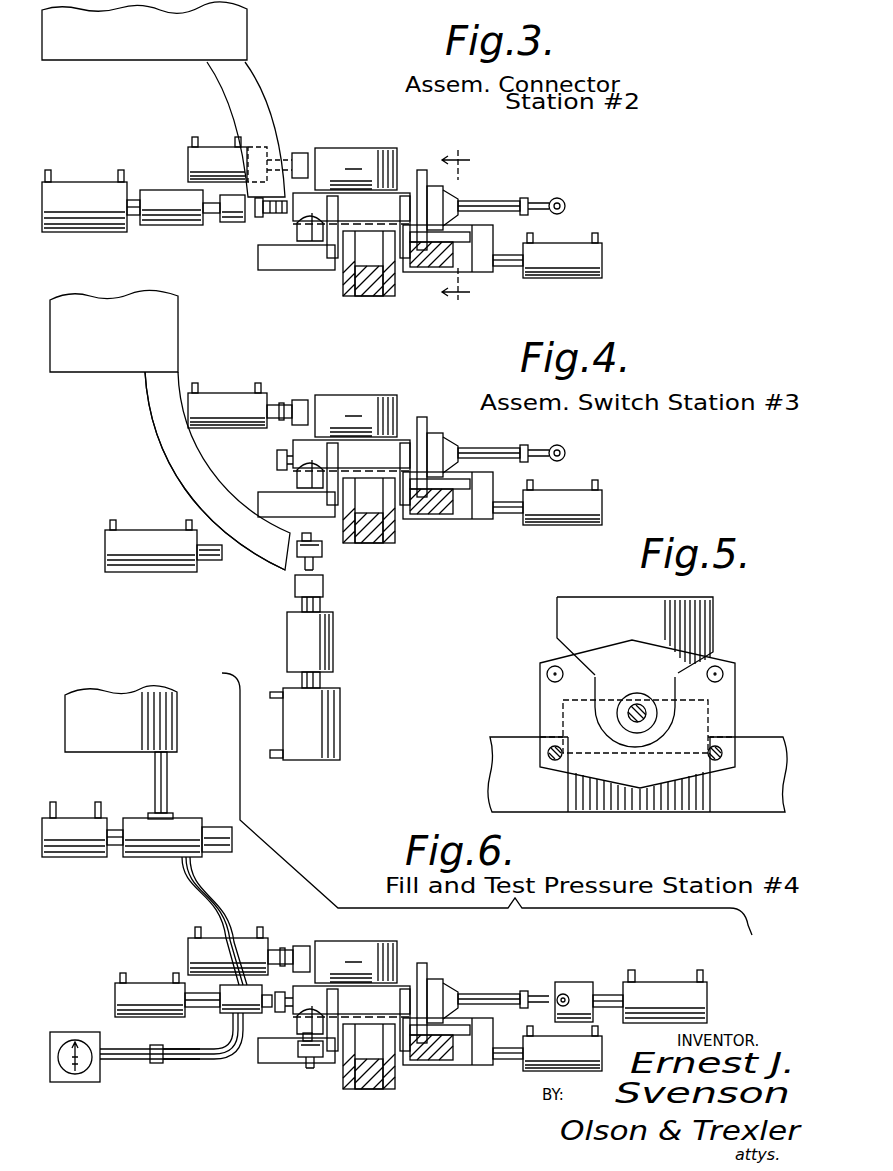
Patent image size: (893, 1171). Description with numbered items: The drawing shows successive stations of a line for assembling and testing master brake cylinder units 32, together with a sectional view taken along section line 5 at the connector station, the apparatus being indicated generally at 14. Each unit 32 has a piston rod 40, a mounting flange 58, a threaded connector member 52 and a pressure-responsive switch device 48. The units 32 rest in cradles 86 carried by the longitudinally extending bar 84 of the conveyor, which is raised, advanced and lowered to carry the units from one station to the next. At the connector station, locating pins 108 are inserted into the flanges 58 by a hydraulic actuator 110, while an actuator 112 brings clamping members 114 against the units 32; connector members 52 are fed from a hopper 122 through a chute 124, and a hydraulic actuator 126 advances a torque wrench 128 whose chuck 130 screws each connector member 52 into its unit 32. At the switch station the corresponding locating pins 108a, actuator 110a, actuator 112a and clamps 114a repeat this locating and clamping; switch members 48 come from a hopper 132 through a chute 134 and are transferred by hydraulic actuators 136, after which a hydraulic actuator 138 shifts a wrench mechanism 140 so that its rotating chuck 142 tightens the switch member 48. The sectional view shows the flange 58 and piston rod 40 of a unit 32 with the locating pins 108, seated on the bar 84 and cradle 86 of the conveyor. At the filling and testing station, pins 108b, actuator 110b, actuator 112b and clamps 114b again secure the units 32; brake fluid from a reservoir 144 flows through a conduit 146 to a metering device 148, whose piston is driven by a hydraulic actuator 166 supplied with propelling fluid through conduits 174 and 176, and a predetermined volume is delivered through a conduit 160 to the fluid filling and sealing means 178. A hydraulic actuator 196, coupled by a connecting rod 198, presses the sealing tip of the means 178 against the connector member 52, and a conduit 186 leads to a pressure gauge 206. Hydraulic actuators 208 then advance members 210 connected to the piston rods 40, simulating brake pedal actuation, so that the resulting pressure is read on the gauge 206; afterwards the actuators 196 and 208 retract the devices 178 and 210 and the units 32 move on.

In FIG. 3, the section line 5 is at (456, 222).
In FIG. 4, the indexing machine 14 is at (194, 364).
In FIG. 3, the master brake cylinder unit 32 is at (368, 141).
In FIG. 4, the master brake cylinder unit 32 is at (378, 389).
In FIG. 5, the master brake cylinder unit 32 is at (724, 615).
In FIG. 6, the master brake cylinder unit 32 is at (378, 939).
In FIG. 3, the piston rod 40 is at (512, 203).
In FIG. 4, the piston rod 40 is at (510, 450).
In FIG. 5, the piston rod 40 is at (655, 715).
In FIG. 6, the piston rod 40 is at (485, 997).
In FIG. 4, the pressure-responsive switch device 48 is at (322, 557).
In FIG. 6, the pressure-responsive switch device 48 is at (298, 1119).
In FIG. 3, the threaded connector member 52 is at (258, 218).
In FIG. 4, the threaded connector member 52 is at (275, 462).
In FIG. 6, the threaded connector member 52 is at (280, 1012).
In FIG. 3, the mounting flange 58 is at (422, 168).
In FIG. 4, the mounting flange 58 is at (420, 418).
In FIG. 5, the mounting flange 58 is at (695, 665).
In FIG. 6, the mounting flange 58 is at (422, 963).
In FIG. 3, the longitudinally extending bar 84 is at (366, 296).
In FIG. 4, the longitudinally extending bar 84 is at (395, 532).
In FIG. 5, the longitudinally extending bar 84 is at (758, 798).
In FIG. 6, the longitudinally extending bar 84 is at (370, 1090).
In FIG. 3, the cradles 86 is at (338, 278).
In FIG. 4, the cradles 86 is at (347, 547).
In FIG. 5, the cradles 86 is at (690, 800).
In FIG. 6, the cradles 86 is at (347, 1088).
In FIG. 3, the locating pins 108 is at (530, 170).
In FIG. 5, the locating pins 108 is at (790, 732).
In FIG. 4, the locating pins 108a is at (510, 439).
In FIG. 6, the locating pins 108b is at (485, 1095).
In FIG. 3, the hydraulic actuator 110 is at (620, 212).
In FIG. 4, the hydraulic actuator 110a is at (625, 475).
In FIG. 6, the hydraulic actuator 110b is at (500, 1148).
In FIG. 3, the actuator 112 is at (212, 152).
In FIG. 4, the actuator 112a is at (270, 374).
In FIG. 6, the actuator 112b is at (190, 912).
In FIG. 3, the clamping members 114 is at (330, 128).
In FIG. 4, the clamps 114a is at (365, 374).
In FIG. 6, the clamps 114b is at (312, 914).
In FIG. 3, the hopper 122 is at (190, 89).
In FIG. 3, the chute 124 is at (197, 98).
In FIG. 3, the cylinder 126 is at (105, 264).
In FIG. 3, the torque wrench 128 is at (185, 264).
In FIG. 3, the chuck 130 is at (240, 264).
In FIG. 4, the hopper 132 is at (255, 325).
In FIG. 4, the chute 134 is at (133, 440).
In FIG. 4, the hydraulic actuators 136 is at (170, 512).
In FIG. 4, the hydraulic actuator 138 is at (443, 680).
In FIG. 4, the wrench mechanism 140 is at (437, 644).
In FIG. 4, the rotating chuck 142 is at (435, 622).
In FIG. 6, the reservoir 144 is at (165, 670).
In FIG. 6, the conduit 146 is at (215, 772).
In FIG. 6, the metering device 148 is at (155, 887).
In FIG. 6, the conduit 160 is at (255, 890).
In FIG. 6, the hydraulic actuator 166 is at (85, 924).
In FIG. 6, the conduit 174 is at (52, 805).
In FIG. 6, the conduit 176 is at (115, 787).
In FIG. 6, the fluid filling and sealing means 178 is at (233, 1057).
In FIG. 6, the conduit 186 is at (170, 1122).
In FIG. 6, the hydraulic actuator 196 is at (140, 954).
In FIG. 6, the connecting rod 198 is at (182, 1030).
In FIG. 6, the gauge 206 is at (103, 1120).
In FIG. 6, the hydraulic actuators 208 is at (676, 977).
In FIG. 6, the members 210 is at (578, 985).